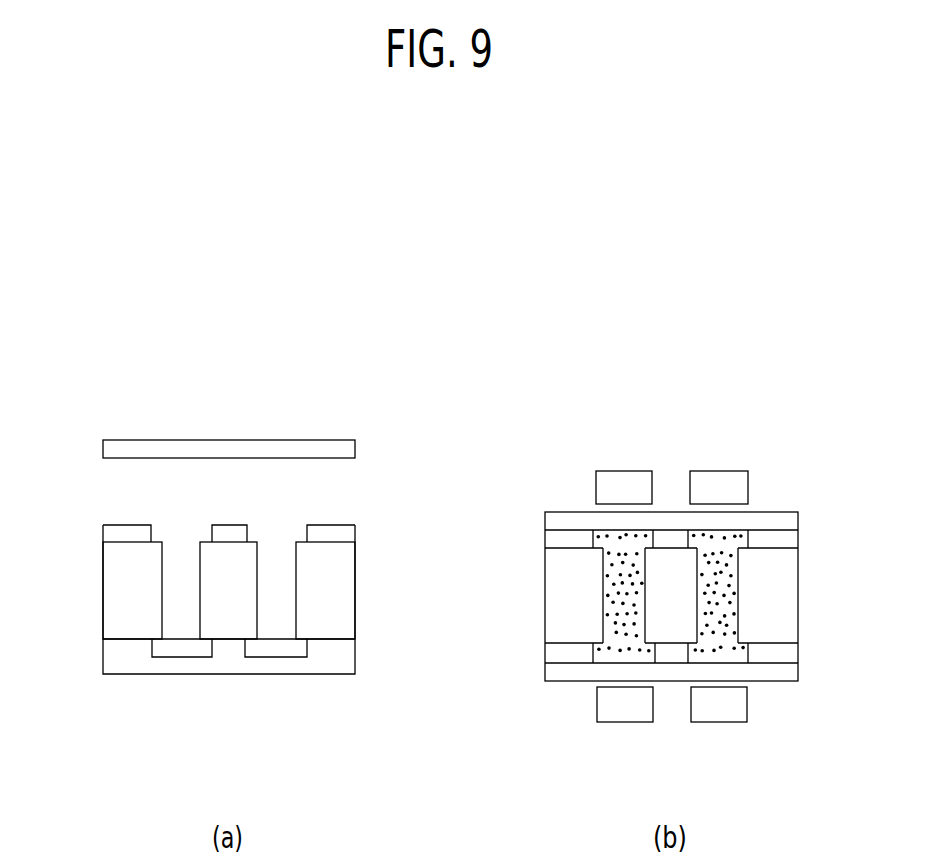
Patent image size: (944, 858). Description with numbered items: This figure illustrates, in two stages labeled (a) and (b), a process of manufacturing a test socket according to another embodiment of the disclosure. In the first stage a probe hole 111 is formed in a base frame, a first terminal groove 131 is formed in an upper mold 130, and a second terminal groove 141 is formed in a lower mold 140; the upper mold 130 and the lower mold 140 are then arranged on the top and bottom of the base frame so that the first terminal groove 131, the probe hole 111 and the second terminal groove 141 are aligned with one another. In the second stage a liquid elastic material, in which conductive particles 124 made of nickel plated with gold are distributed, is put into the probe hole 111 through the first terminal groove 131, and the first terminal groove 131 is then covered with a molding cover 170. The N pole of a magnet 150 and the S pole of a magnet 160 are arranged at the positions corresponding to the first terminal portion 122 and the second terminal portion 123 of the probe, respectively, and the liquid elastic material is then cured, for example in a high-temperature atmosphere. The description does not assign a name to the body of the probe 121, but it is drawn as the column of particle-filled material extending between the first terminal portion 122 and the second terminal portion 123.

The probe hole 111 is at (175, 590).
The magnet 121 is at (603, 573).
The first terminal portion 122 is at (593, 542).
The second terminal portion 123 is at (595, 653).
The conductive particles 124 is at (603, 638).
The upper mold 130 is at (335, 528).
The first terminal groove 131 is at (180, 535).
The lower mold 140 is at (338, 672).
The second terminal groove 141 is at (180, 650).
The magnet 150 is at (740, 472).
The magnet 160 is at (743, 722).
The molding cover 170 is at (256, 448).